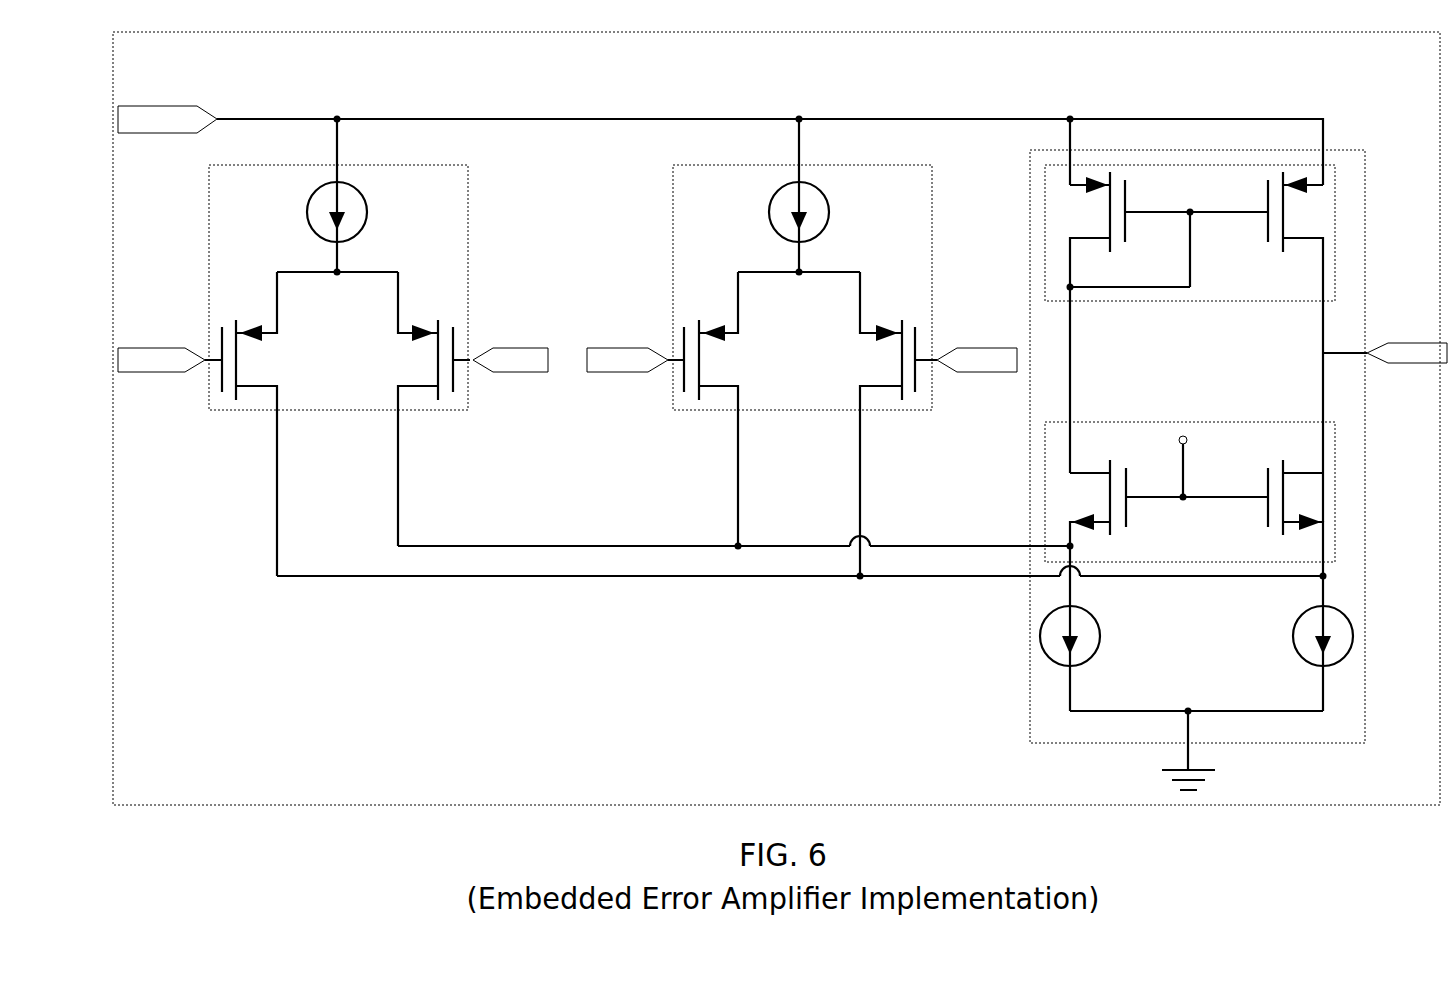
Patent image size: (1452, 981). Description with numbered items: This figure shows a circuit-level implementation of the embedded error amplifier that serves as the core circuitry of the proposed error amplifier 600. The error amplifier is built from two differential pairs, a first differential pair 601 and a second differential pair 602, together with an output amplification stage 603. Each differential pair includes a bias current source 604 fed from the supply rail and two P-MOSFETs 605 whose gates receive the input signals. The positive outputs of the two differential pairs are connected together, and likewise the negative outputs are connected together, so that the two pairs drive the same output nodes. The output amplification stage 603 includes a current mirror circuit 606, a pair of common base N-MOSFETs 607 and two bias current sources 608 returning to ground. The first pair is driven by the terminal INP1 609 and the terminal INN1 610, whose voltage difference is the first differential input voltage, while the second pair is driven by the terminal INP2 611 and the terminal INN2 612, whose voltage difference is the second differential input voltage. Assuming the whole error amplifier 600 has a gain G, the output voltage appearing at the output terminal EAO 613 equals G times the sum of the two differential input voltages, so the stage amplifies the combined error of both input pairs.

The error amplifier 600 is at (760, 69).
The first differential pair 601 is at (468, 165).
The second differential pair 602 is at (673, 270).
The output amplification stage 603 is at (1030, 150).
The bias current source 604 is at (390, 237).
The P-MOSFETs 605 is at (407, 362).
The current mirror circuit 606 is at (1243, 303).
The pair of common base N-MOSFET 607 is at (1185, 423).
The bias current sources 608 is at (1277, 650).
The terminal INP1 609 is at (513, 378).
The terminal INN1 610 is at (165, 378).
The terminal INP2 611 is at (625, 378).
The terminal INN2 612 is at (975, 378).
The output terminal EAO 613 is at (1410, 372).